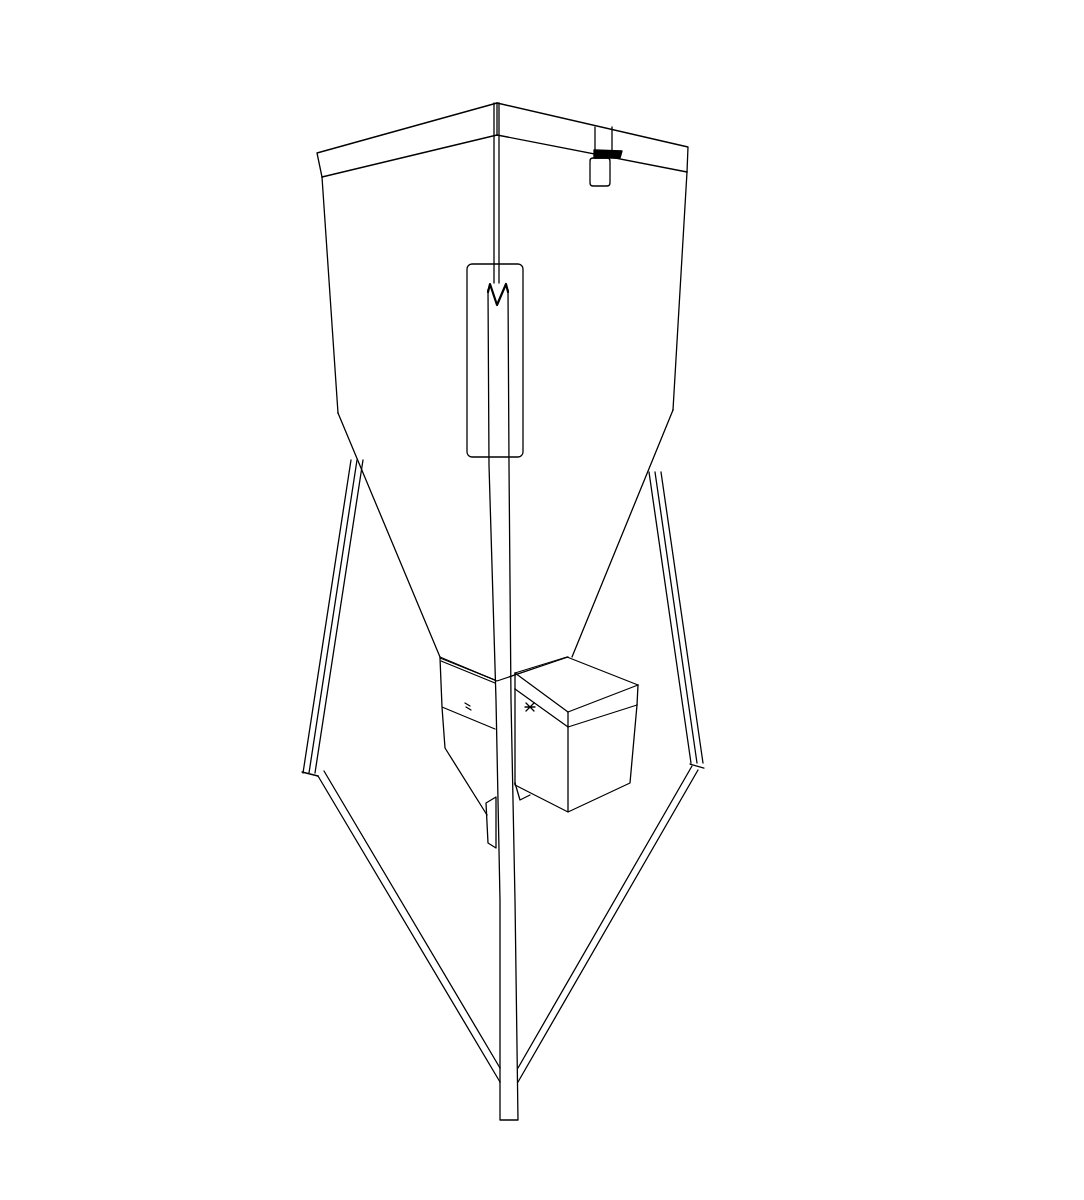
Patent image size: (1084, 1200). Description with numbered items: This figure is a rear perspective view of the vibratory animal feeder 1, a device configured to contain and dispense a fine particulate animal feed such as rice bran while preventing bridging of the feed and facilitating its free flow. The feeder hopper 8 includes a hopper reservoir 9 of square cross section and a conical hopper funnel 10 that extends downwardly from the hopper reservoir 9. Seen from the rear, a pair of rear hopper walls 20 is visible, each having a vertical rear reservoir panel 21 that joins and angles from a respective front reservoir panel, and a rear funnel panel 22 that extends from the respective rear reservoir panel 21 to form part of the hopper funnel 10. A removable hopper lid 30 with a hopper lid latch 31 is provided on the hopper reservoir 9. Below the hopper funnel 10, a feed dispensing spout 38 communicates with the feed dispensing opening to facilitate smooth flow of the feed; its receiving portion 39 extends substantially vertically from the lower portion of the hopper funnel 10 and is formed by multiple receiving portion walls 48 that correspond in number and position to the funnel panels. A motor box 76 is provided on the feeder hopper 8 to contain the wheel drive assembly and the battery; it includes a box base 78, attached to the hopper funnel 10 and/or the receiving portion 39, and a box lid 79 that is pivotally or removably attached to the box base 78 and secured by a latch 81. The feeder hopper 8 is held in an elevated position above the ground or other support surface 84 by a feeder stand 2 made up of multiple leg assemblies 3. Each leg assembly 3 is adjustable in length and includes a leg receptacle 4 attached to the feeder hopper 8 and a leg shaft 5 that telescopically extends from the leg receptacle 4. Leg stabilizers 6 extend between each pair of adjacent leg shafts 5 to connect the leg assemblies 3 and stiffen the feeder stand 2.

The vibratory animal feeder 1 is at (250, 126).
The feeder stand 2 is at (326, 552).
The leg assembly 3 is at (696, 670).
The leg receptacle 4 is at (500, 398).
The leg shaft 5 is at (495, 522).
The leg stabilizer 6 is at (392, 908).
The feeder hopper 8 is at (716, 157).
The hopper reservoir 9 is at (318, 221).
The hopper funnel 10 is at (381, 532).
The rear hopper wall 20 is at (362, 343).
The rear reservoir panel 21 is at (343, 285).
The rear funnel panel 22 is at (427, 568).
The hopper lid 30 is at (398, 125).
The hopper lid latch 31 is at (616, 151).
The feed dispensing spout 38 is at (433, 730).
The receiving portion 39 is at (439, 748).
The receiving portion wall 48 is at (465, 755).
The motor box 76 is at (644, 742).
The box base 78 is at (581, 795).
The box lid 79 is at (582, 687).
The latch 81 is at (530, 709).
The support surface 84 is at (647, 1041).